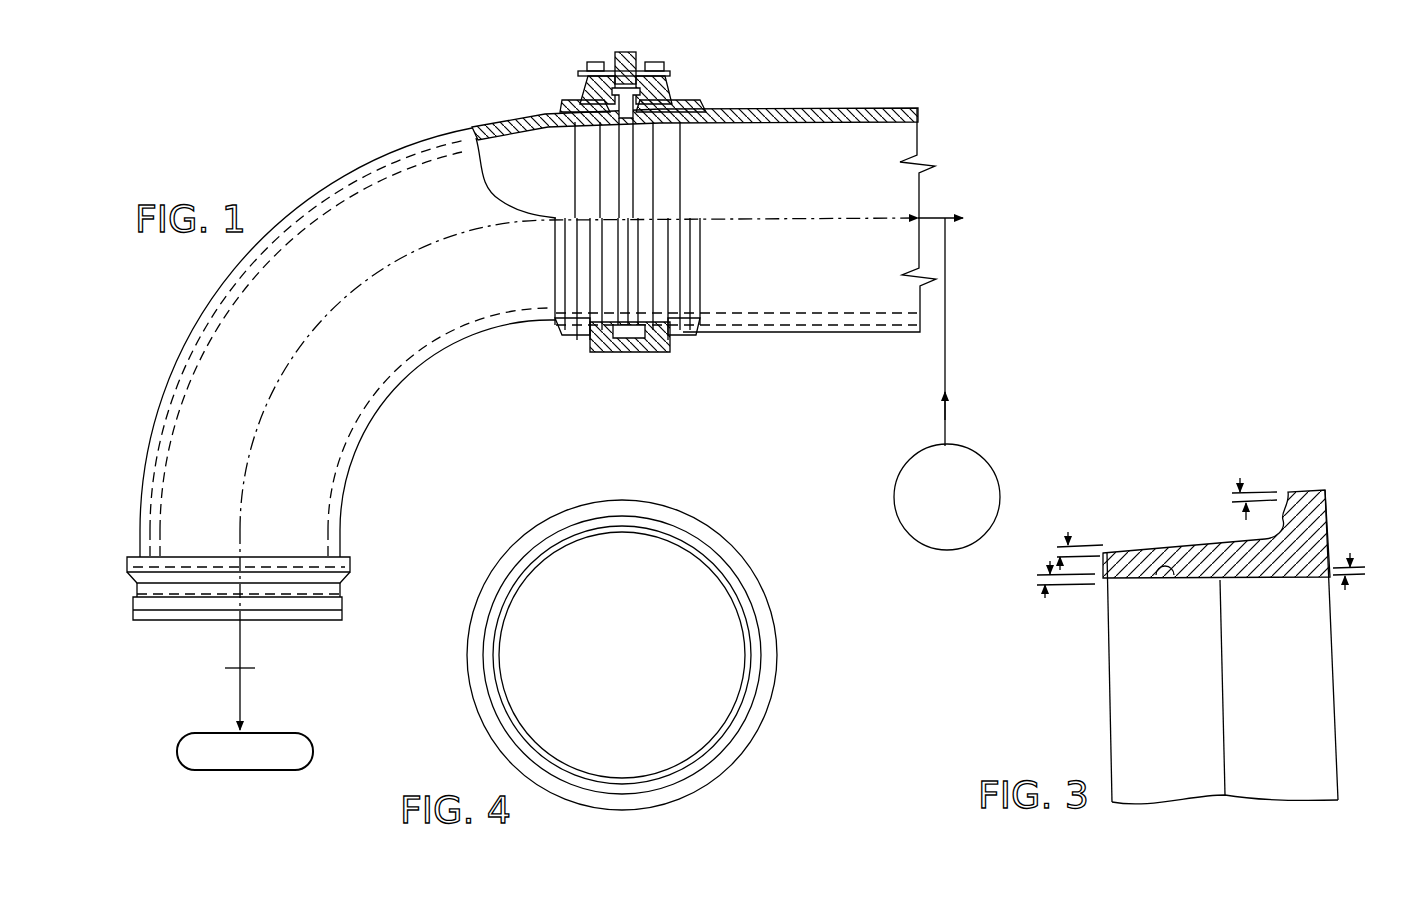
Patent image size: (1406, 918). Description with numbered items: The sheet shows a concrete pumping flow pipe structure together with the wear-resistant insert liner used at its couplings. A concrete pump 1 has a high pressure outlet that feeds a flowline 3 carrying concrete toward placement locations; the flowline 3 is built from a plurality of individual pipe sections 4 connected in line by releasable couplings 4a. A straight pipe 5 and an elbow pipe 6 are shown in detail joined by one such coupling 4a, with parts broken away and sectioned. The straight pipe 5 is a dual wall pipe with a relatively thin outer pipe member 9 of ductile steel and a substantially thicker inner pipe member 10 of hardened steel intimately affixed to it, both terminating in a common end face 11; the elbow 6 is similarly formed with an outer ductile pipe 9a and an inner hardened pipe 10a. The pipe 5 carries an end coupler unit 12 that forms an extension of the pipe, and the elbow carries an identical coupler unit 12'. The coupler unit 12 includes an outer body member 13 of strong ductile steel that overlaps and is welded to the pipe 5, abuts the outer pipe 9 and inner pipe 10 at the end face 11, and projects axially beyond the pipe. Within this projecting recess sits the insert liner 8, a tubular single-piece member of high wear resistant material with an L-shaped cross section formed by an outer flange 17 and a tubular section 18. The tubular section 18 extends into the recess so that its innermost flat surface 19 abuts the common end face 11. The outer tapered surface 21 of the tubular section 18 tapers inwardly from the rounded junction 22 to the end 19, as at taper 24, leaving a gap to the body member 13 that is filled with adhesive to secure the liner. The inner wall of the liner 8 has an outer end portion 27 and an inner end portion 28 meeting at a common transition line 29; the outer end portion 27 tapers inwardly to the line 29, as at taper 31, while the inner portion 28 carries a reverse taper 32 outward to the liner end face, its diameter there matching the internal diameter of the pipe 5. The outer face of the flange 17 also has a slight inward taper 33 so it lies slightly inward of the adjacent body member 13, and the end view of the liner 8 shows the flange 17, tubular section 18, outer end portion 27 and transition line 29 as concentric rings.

In FIG. 1, the concrete pump 1 is at (985, 463).
In FIG. 1, the flowline 3 is at (945, 358).
In FIG. 1, the pipe sections 4 is at (222, 645).
In FIG. 1, the releasable couplings 4a is at (238, 668).
In FIG. 1, the straight pipe 5 is at (882, 106).
In FIG. 1, the elbow pipe 6 is at (358, 165).
In FIG. 1, the insert liner 8 is at (640, 132).
In FIG. 4, the insert liner 8 is at (676, 622).
In FIG. 3, the insert liner 8 is at (1103, 745).
In FIG. 1, the outer pipe member 9 is at (803, 108).
In FIG. 1, the outer ductile pipe 9a is at (476, 124).
In FIG. 1, the inner pipe member 10 is at (845, 124).
In FIG. 1, the inner hardened pipe 10a is at (475, 140).
In FIG. 1, the common end face 11 is at (668, 126).
In FIG. 1, the end coupler unit 12 is at (658, 197).
In FIG. 1, the coupling clamp half 12' is at (547, 69).
In FIG. 1, the outer body member 13 is at (692, 100).
In FIG. 4, the outer flange 17 is at (776, 650).
In FIG. 3, the outer flange 17 is at (1318, 516).
In FIG. 4, the tubular section 18 is at (746, 705).
In FIG. 3, the tubular section 18 is at (1213, 570).
In FIG. 3, the flat surface 19 is at (1102, 563).
In FIG. 3, the outer tapered surface 21 is at (1125, 545).
In FIG. 3, the rounded junction 22 is at (1270, 550).
In FIG. 3, the taper 24 is at (1057, 548).
In FIG. 4, the outer end portion 27 is at (718, 746).
In FIG. 3, the outer end portion 27 is at (1170, 580).
In FIG. 3, the inner end portion 28 is at (1242, 580).
In FIG. 4, the common transition line 29 is at (746, 652).
In FIG. 3, the common transition line 29 is at (1222, 690).
In FIG. 3, the taper 31 is at (1038, 585).
In FIG. 3, the reverse taper 32 is at (1366, 572).
In FIG. 3, the flange taper 33 is at (1228, 500).